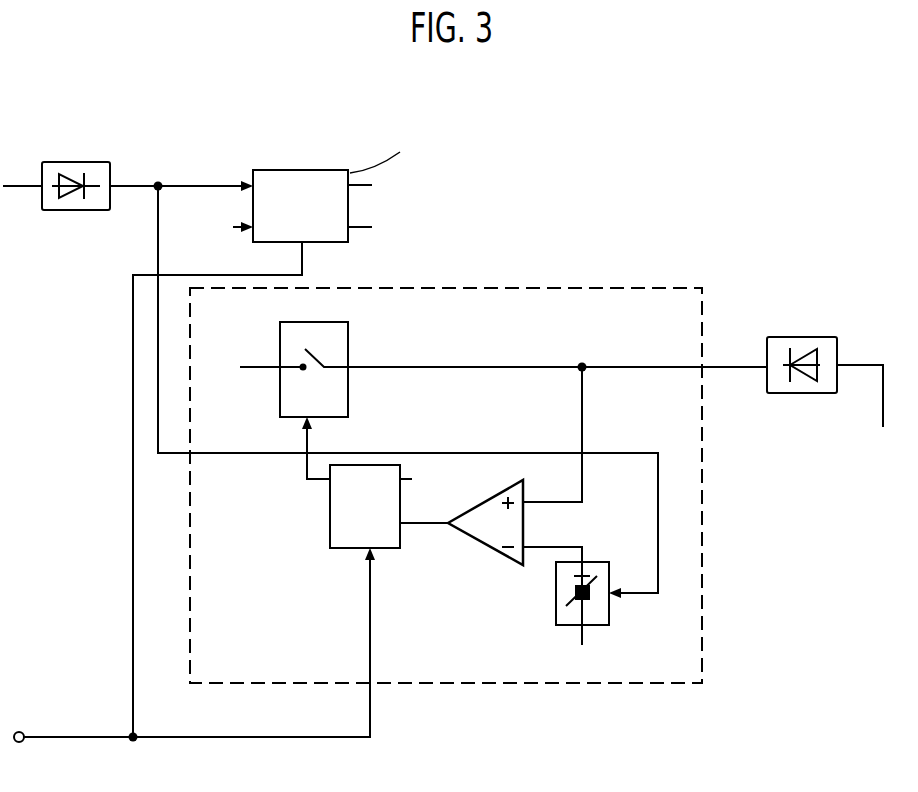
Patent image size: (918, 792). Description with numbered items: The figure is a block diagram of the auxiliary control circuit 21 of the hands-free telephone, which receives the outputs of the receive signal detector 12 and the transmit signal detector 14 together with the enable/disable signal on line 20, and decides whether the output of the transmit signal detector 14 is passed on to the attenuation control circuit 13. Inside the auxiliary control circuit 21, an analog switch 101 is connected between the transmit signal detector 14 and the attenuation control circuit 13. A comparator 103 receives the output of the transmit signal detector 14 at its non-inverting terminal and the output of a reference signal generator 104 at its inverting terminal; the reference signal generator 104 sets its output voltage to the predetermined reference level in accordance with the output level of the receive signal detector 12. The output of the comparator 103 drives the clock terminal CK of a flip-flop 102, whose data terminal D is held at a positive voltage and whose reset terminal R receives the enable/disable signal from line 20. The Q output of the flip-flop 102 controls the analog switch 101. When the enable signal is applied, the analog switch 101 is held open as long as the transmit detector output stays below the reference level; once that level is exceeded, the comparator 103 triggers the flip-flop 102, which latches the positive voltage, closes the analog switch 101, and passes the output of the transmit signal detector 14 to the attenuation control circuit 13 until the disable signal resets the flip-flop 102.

The receive signal detector 12 is at (94, 162).
The attenuation control circuit 13 is at (334, 170).
The transmit signal detector 14 is at (798, 337).
The enable/disable signal line 20 is at (70, 737).
The auxiliary control circuit 21 is at (618, 288).
The analog switch 101 is at (348, 340).
The flip-flop 102 is at (330, 530).
The comparator 103 is at (478, 507).
The reference signal generator 104 is at (598, 562).